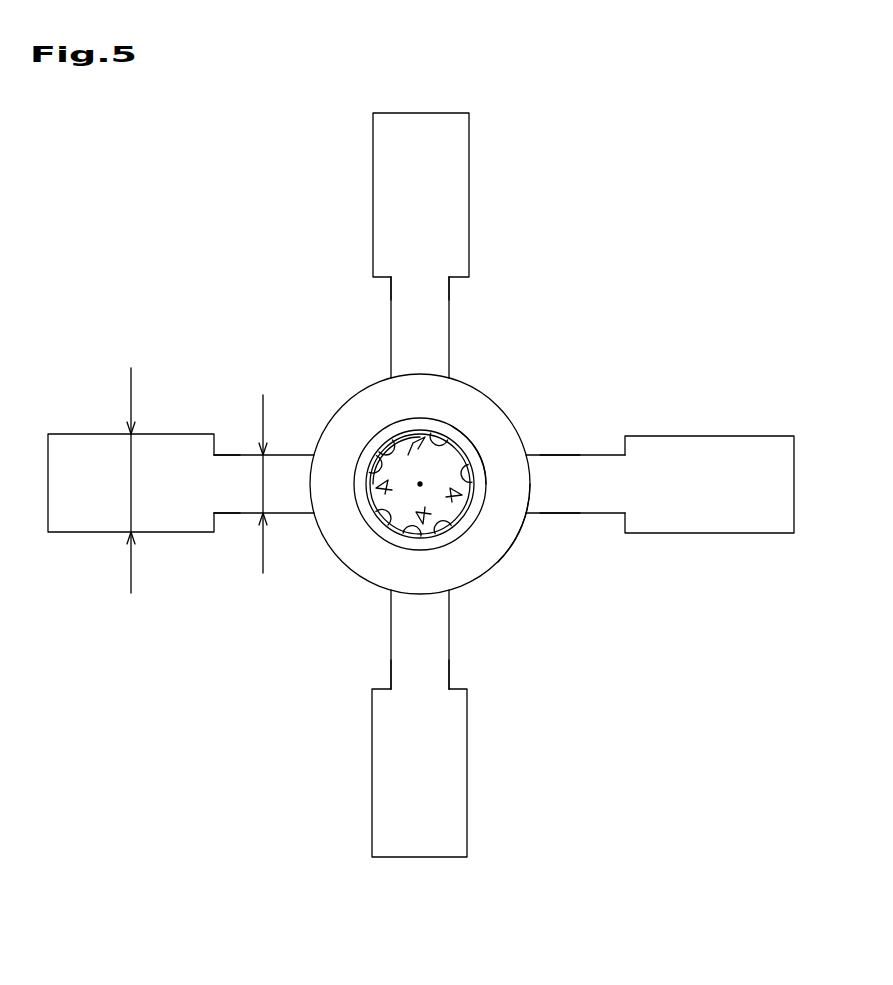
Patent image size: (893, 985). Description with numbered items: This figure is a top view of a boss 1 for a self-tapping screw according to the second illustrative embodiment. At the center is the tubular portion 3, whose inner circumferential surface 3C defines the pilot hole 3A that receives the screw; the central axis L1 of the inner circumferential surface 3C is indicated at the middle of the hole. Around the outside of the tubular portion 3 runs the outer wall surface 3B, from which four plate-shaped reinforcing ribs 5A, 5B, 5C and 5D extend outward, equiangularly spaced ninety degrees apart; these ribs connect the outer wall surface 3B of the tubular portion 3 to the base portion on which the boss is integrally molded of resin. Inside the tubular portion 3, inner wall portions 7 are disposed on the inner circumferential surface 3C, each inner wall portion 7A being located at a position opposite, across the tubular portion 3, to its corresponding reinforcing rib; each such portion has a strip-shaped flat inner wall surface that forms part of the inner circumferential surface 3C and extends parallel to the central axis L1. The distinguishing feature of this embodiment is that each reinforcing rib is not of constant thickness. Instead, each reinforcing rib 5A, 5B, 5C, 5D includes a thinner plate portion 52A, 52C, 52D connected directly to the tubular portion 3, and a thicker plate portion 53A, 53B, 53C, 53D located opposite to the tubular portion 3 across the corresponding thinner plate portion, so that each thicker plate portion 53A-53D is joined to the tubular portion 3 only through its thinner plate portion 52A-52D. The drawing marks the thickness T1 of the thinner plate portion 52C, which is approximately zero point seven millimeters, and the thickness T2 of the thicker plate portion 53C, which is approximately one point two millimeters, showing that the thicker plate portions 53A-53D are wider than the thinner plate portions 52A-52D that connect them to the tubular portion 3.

The boss 1 is at (507, 327).
The tubular portion 3 is at (510, 418).
The pilot hole 3A is at (358, 533).
The outer wall surface 3B is at (527, 523).
The inner circumferential surface 3C is at (455, 425).
The reinforcing rib 5A is at (605, 453).
The reinforcing rib 5B is at (448, 658).
The reinforcing rib 5C is at (237, 515).
The reinforcing rib 5D is at (390, 348).
The thinner plate portion 52A is at (413, 665).
The thinner plate portion 52C is at (232, 465).
The thinner plate portion 52D is at (412, 310).
The thicker plate portion 53A is at (720, 457).
The thicker plate portion 53B is at (420, 833).
The thicker plate portion 53C is at (70, 457).
The thicker plate portion 53D is at (433, 163).
The inner wall portion 7 is at (390, 445).
The inner wall portion 7A is at (374, 490).
The central axis L1 is at (420, 484).
The thickness of thinner plate portion T1 is at (250, 487).
The thickness of thicker plate portion T2 is at (118, 482).